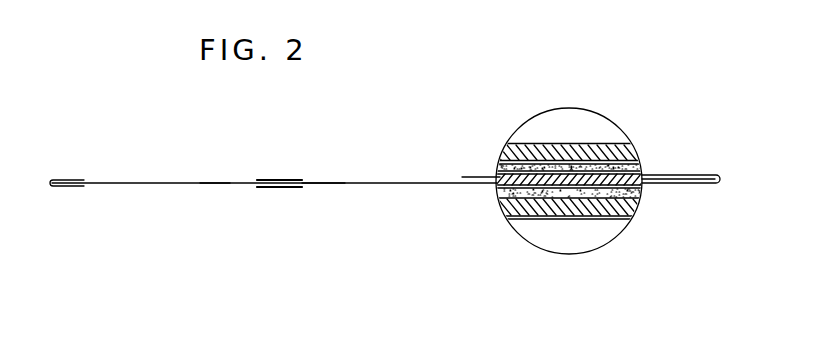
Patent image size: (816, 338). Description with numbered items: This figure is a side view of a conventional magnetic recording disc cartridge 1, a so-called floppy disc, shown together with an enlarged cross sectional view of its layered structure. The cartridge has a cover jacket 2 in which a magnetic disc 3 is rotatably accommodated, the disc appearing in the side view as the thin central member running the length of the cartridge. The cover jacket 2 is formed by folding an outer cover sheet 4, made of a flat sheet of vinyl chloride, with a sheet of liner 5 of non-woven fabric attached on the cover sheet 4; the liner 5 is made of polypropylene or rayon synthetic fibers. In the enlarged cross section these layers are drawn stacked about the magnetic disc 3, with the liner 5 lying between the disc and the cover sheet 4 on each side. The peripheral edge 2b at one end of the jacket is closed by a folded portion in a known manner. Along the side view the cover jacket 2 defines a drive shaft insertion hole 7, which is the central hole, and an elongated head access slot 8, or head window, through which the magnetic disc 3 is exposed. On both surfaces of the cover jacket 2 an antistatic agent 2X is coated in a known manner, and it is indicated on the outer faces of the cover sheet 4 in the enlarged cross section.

The magnetic recording disc cartridge 1 is at (319, 148).
The cover jacket 2 is at (625, 142).
The antistatic agent 2X is at (530, 142).
The peripheral edge 2b is at (700, 174).
The magnetic disc 3 is at (172, 181).
The outer cover sheet 4 is at (65, 178).
The liner 5 is at (640, 165).
The drive shaft insertion hole 7 is at (335, 180).
The head access slot 8 is at (213, 179).